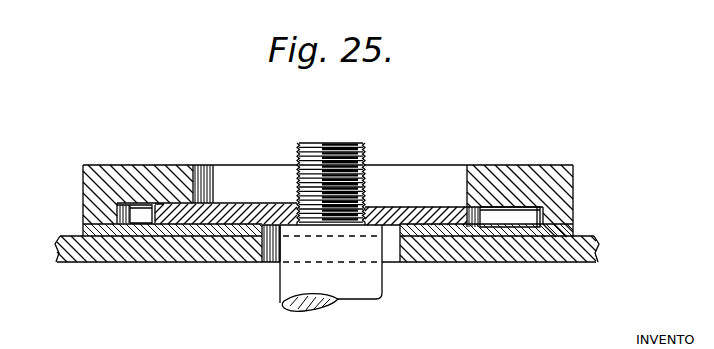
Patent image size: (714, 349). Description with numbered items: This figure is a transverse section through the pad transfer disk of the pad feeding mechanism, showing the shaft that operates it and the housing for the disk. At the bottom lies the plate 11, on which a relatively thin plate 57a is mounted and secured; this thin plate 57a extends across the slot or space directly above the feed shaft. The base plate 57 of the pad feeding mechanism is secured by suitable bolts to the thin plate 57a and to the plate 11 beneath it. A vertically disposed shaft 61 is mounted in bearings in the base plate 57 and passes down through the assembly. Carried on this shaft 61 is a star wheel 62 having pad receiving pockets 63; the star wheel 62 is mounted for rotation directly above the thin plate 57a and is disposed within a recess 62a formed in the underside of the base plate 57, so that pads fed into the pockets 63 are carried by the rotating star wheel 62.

The plate 11 is at (150, 253).
The base plate 57 is at (500, 180).
The thin plate 57a is at (220, 230).
The shaft 61 is at (370, 290).
The star wheel 62 is at (447, 220).
The recess 62a is at (532, 207).
The pad receiving pockets 63 is at (515, 220).